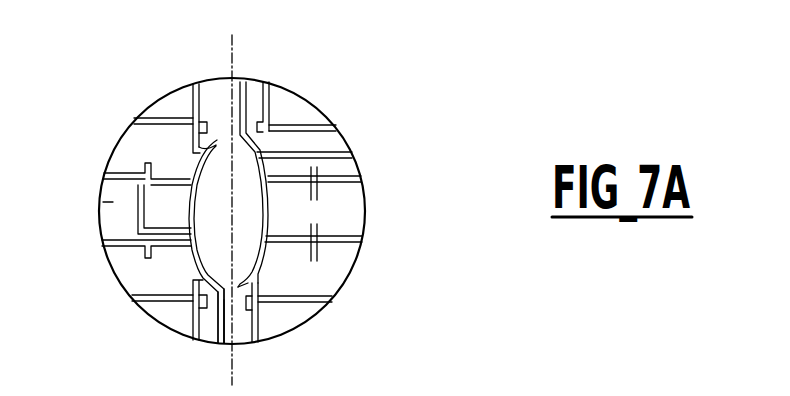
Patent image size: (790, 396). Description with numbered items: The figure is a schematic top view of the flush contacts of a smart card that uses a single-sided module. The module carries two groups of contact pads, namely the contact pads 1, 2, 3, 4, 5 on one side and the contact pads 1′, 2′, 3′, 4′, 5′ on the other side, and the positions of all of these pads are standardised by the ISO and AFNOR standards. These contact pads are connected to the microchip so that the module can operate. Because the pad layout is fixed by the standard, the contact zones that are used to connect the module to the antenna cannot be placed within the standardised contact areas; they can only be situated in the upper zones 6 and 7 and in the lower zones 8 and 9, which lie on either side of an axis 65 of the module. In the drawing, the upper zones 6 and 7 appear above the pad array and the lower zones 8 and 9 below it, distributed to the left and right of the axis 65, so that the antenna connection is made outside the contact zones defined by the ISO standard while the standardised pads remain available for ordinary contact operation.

The contact pad 1 is at (297, 110).
The contact pad 2 is at (333, 153).
The contact pad 3 is at (350, 211).
The contact pad 4 is at (332, 277).
The contact pad 5 is at (288, 317).
The contact pad 1′ is at (170, 313).
The contact pad 2′ is at (135, 270).
The contact pad 3′ is at (105, 202).
The contact pad 4′ is at (134, 149).
The contact pad 5′ is at (168, 107).
The upper zone 6 is at (212, 88).
The upper zone 7 is at (253, 87).
The lower zone 8 is at (210, 330).
The lower zone 9 is at (248, 330).
The axis 65 is at (238, 40).